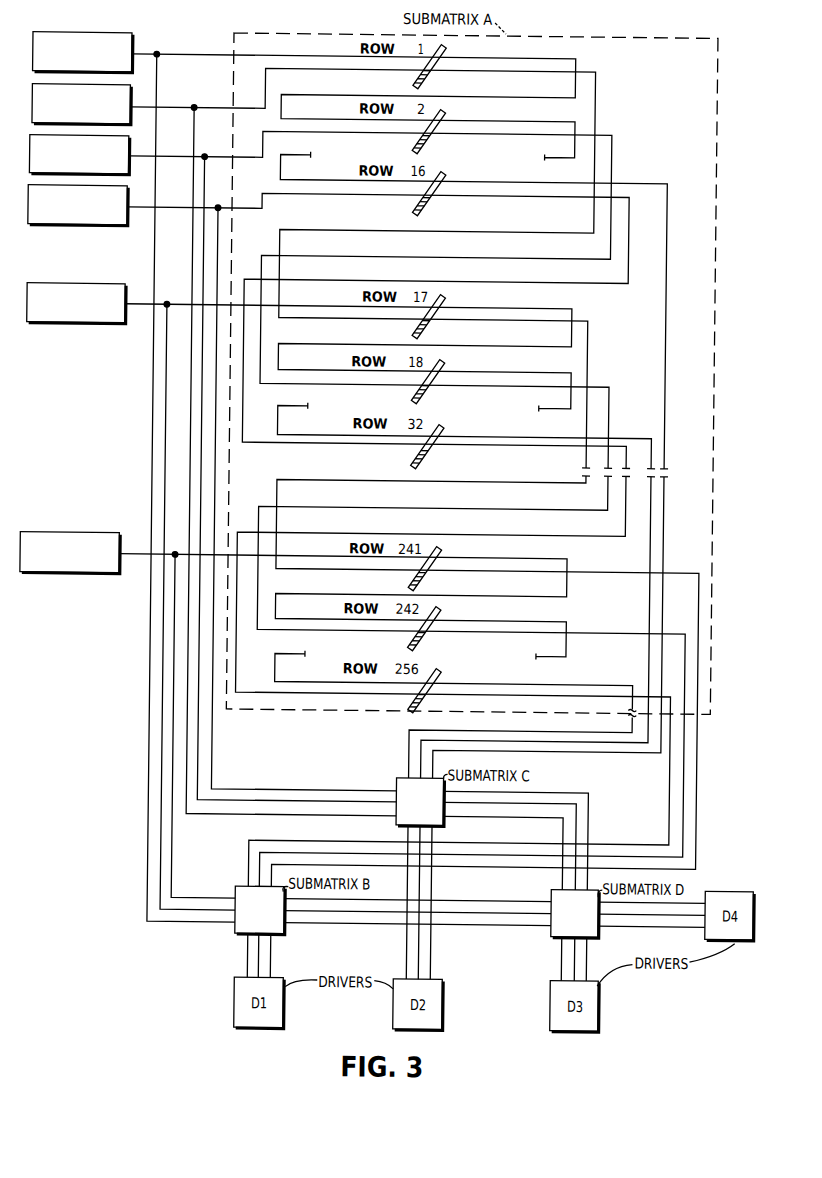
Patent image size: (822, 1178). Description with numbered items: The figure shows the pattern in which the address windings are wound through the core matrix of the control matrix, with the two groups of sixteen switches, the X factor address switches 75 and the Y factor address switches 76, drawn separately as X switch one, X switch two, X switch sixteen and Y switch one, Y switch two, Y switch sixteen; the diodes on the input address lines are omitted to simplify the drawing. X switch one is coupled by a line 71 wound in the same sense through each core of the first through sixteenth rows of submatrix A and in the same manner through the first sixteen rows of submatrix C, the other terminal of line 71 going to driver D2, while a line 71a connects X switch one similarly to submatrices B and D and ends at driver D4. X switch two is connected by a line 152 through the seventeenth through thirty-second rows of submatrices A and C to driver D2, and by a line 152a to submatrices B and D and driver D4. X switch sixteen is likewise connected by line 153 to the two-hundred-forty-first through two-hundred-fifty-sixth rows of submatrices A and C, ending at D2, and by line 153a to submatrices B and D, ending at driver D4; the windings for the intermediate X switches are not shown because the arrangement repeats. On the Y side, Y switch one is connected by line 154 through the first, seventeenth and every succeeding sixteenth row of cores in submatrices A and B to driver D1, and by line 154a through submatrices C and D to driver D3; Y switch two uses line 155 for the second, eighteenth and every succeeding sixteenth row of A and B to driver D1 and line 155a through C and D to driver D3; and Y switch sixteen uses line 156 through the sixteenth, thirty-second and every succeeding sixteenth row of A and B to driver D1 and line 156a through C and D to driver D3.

The line 71 is at (200, 55).
The line 71a is at (155, 602).
The X factor address switches 75 is at (118, 34).
The Y factor address switches 76 is at (31, 117).
The line 152 is at (186, 305).
The line 152a is at (168, 630).
The line 153 is at (178, 555).
The line 153a is at (180, 652).
The line 154 is at (195, 108).
The line 154a is at (195, 703).
The line 155 is at (206, 157).
The line 155a is at (206, 732).
The line 156 is at (219, 208).
The line 156a is at (212, 772).